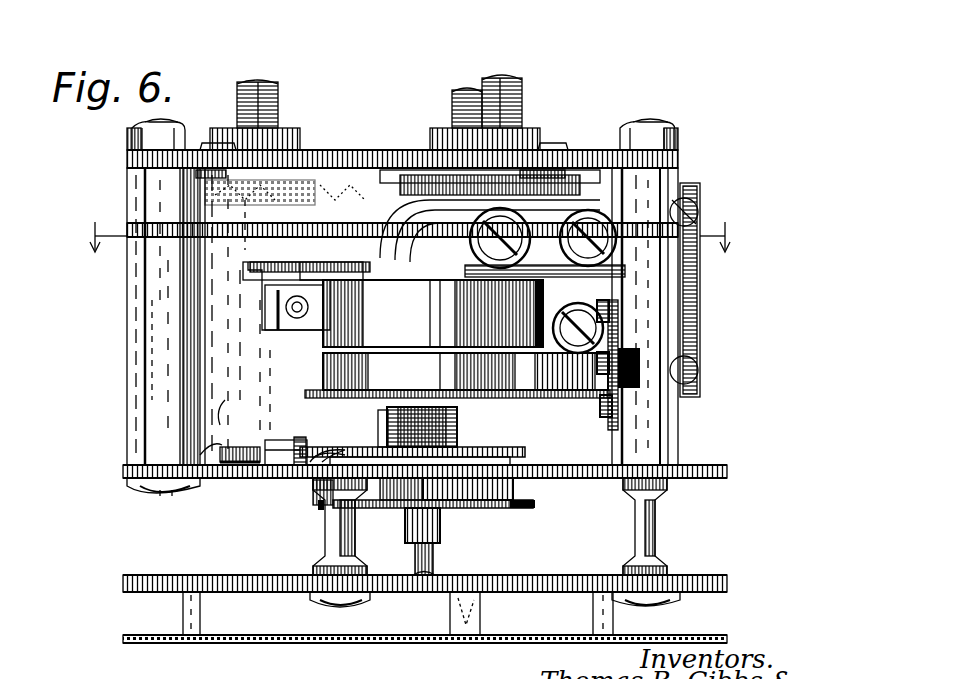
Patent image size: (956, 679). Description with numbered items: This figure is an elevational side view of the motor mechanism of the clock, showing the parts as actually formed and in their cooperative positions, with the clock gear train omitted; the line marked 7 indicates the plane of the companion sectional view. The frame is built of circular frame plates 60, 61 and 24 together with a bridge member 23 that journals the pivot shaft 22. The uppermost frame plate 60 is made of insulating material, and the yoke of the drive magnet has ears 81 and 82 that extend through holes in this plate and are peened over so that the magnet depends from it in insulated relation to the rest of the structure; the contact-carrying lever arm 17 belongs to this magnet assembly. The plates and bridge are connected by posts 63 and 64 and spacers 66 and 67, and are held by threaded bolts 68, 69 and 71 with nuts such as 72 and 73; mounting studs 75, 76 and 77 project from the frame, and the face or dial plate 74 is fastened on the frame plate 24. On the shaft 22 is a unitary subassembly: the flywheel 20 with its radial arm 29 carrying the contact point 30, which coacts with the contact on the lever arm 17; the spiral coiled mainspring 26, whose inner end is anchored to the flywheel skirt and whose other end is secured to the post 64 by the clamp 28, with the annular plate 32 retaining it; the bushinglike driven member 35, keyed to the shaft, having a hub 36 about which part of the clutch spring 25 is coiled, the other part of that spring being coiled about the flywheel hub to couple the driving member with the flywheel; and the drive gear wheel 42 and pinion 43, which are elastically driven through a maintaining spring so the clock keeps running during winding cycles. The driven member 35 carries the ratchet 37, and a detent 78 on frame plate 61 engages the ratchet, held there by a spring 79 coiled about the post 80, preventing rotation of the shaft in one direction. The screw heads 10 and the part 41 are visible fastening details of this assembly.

The section line 7- 7 is at (408, 228).
The screw heads 10 is at (570, 272).
The lever arm 17 is at (338, 258).
The flywheel 20 is at (414, 330).
The pivot shaft 22 is at (435, 560).
The bridge member 23 is at (150, 236).
The frame plate 24 is at (152, 575).
The clutch spring 25 is at (458, 423).
The mainspring 26 is at (407, 388).
The clamp member 28 is at (628, 342).
The arm 29 is at (300, 330).
The contact point 30 is at (273, 322).
The annular plate 32 is at (308, 392).
The driven member 35 is at (530, 502).
The hub 36 is at (380, 424).
The ratchet wheel 37 is at (515, 455).
The clamp 41 is at (535, 504).
The drive wheel 42 is at (490, 510).
The pinion 43 is at (440, 528).
The frame plate 60 is at (680, 157).
The frame plate 61 is at (727, 472).
The post 63 is at (148, 360).
The post 64 is at (670, 432).
The spacer 66 is at (330, 530).
The spacer 67 is at (664, 535).
The threaded bolt 68 is at (155, 126).
The threaded bolt 69 is at (642, 125).
The threaded bolt 71 is at (360, 606).
The nut 72 is at (130, 140).
The nut 73 is at (678, 132).
The dial plate 74 is at (305, 643).
The mounting stud 75 is at (278, 112).
The mounting stud 76 is at (458, 107).
The mounting stud 77 is at (520, 110).
The detent 78 is at (318, 445).
The spring 79 is at (300, 435).
The post 80 is at (232, 450).
The ear 81 is at (205, 143).
The ear 82 is at (560, 143).